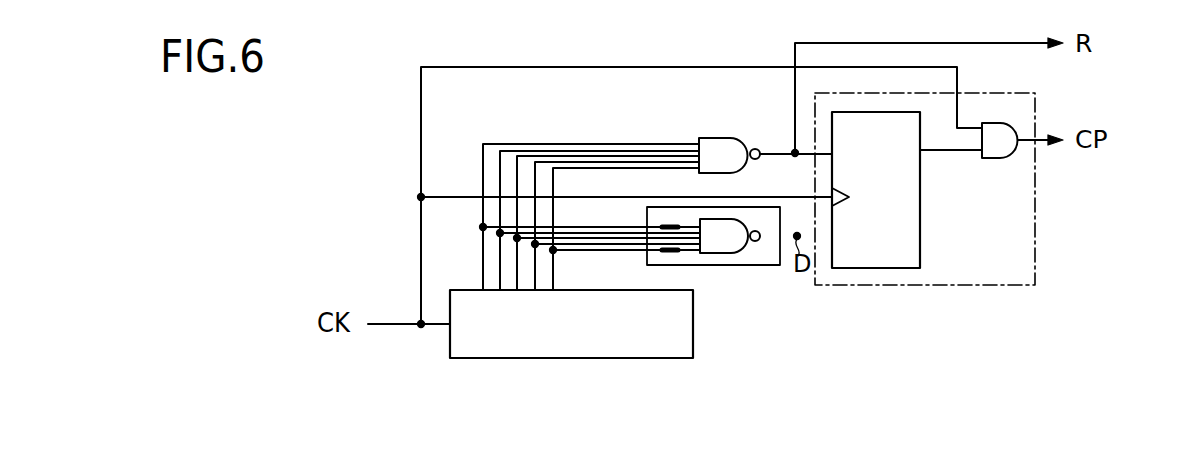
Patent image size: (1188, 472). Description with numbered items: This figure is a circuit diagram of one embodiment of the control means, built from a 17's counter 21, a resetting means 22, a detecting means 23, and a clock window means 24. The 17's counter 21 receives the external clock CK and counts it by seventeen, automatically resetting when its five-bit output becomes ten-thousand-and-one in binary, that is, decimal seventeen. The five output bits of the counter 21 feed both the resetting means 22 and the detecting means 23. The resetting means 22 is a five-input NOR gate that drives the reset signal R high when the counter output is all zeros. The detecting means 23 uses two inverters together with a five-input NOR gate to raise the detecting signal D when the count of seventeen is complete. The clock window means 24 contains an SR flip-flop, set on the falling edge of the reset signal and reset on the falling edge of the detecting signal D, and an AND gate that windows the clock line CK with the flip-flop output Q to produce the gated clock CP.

The 17's counter 21 is at (620, 345).
The resetting means 22 is at (720, 150).
The detecting means 23 is at (742, 258).
The clock window means 24 is at (997, 277).